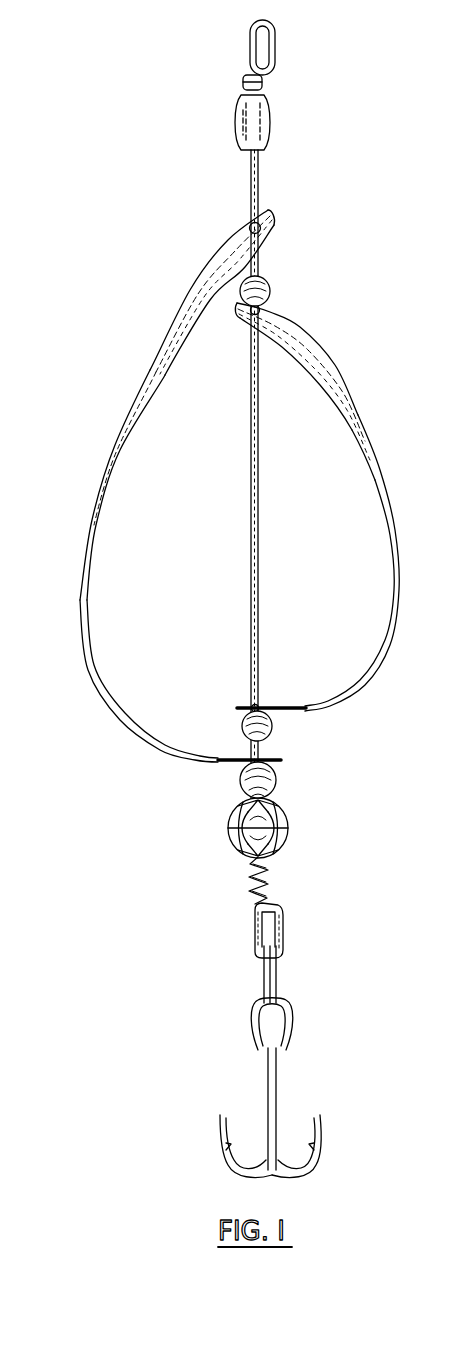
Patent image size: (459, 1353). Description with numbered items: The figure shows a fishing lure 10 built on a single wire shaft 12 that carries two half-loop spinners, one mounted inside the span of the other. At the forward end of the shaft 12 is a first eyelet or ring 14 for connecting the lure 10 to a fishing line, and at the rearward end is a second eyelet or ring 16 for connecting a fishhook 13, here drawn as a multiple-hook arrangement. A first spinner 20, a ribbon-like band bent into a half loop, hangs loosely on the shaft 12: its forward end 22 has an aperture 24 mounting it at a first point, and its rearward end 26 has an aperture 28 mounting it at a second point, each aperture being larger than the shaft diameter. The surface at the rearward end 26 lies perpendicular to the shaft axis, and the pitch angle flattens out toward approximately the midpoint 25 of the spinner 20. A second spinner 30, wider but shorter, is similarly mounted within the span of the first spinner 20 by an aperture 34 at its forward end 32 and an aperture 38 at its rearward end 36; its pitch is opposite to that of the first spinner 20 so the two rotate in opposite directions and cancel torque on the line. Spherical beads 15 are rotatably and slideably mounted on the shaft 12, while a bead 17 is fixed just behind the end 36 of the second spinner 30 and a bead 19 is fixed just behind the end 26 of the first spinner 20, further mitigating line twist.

The fishing lure 10 is at (100, 128).
The shaft 12 is at (256, 173).
The fishhook 13 is at (277, 1067).
The first eyelet or ring 14 is at (263, 43).
The spacing beads 15 is at (258, 288).
The second eyelet or ring 16 is at (286, 928).
The spacing bead 17 is at (262, 731).
The spacing bead 19 is at (274, 780).
The first spinner 20 is at (80, 451).
The forward end of the first spinner 22 is at (230, 261).
The aperture 24 is at (250, 223).
The midpoint 25 is at (87, 581).
The rearward end of the first spinner 26 is at (180, 757).
The aperture 28 is at (261, 752).
The second spinner 30 is at (380, 424).
The forward end of the second spinner 32 is at (286, 338).
The aperture 34 is at (258, 309).
The rearward end of the second spinner 36 is at (318, 698).
The aperture 38 is at (249, 706).